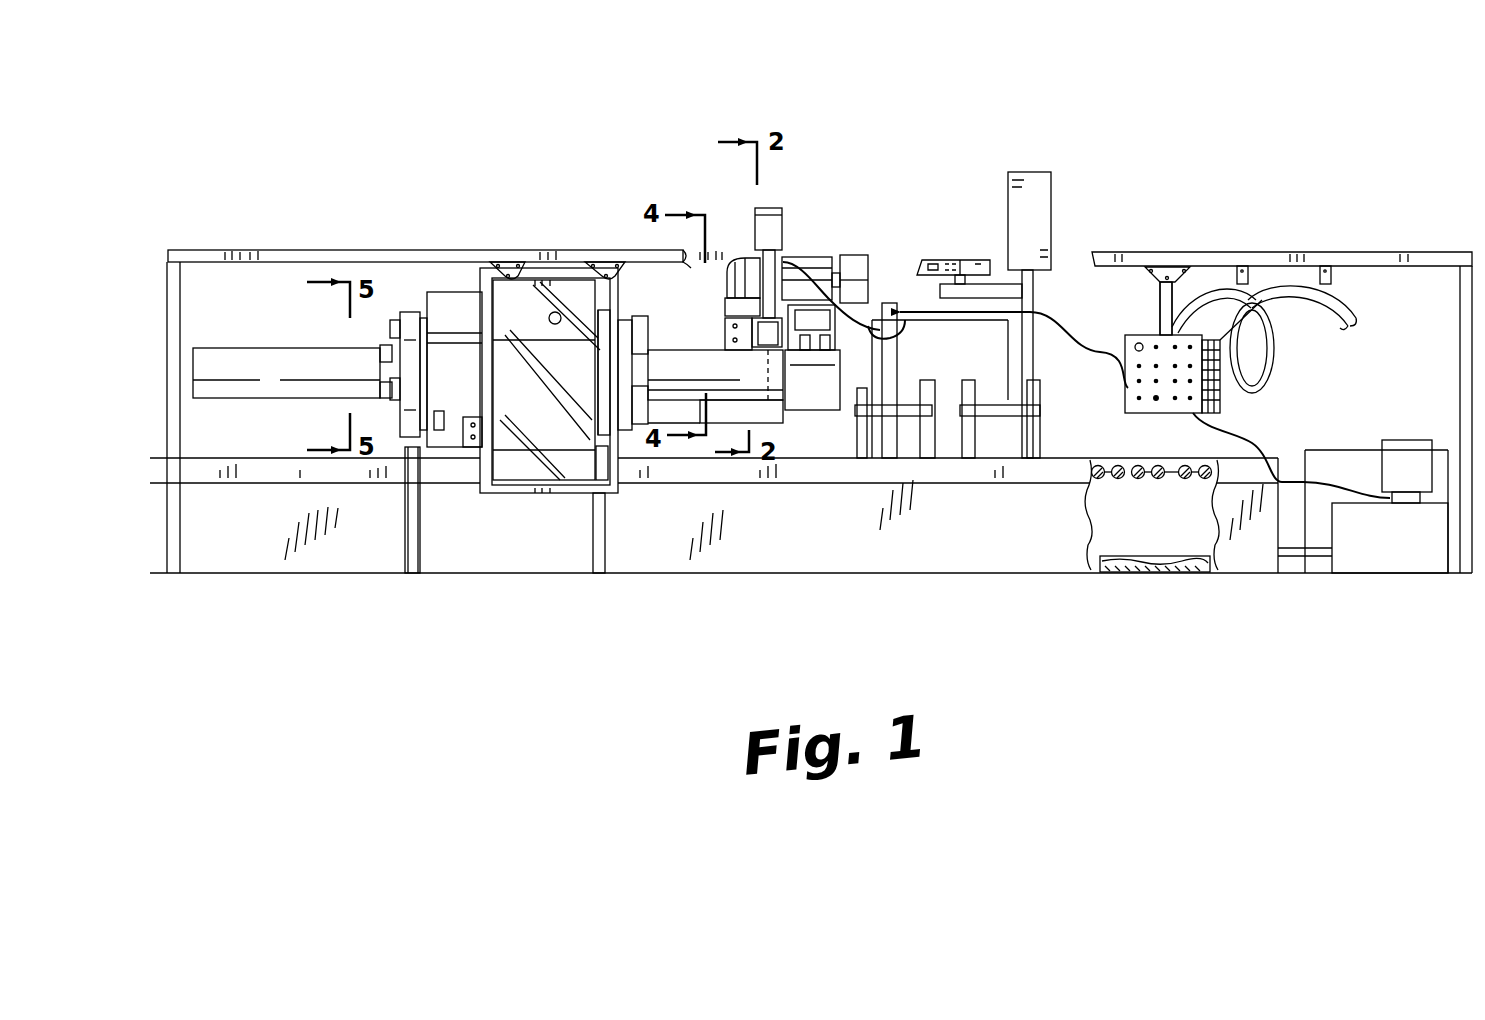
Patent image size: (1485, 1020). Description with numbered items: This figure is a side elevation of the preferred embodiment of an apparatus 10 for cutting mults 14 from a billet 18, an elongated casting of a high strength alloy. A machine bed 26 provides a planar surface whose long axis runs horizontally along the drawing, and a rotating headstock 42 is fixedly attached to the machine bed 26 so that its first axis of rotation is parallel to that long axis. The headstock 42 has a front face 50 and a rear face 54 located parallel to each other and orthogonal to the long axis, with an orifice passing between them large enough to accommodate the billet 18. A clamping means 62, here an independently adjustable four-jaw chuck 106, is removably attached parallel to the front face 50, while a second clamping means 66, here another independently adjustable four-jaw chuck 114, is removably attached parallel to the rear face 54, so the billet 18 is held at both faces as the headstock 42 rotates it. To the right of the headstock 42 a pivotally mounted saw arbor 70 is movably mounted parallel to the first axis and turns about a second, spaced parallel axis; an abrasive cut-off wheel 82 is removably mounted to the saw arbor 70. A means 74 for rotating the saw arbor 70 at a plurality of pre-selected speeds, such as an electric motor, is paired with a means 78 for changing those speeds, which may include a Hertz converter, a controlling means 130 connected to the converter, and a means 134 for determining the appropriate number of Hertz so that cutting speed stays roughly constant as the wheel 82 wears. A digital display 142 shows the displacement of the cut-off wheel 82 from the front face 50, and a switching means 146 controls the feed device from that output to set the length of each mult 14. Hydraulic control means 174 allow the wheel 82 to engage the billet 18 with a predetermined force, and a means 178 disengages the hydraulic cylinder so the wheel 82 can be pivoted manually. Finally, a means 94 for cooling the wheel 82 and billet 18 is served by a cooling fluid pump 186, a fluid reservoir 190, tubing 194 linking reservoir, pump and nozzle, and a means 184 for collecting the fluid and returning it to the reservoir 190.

The apparatus 10 is at (1142, 150).
The mult 14 is at (775, 387).
The billet 18 is at (725, 385).
The machine bed 26 is at (1048, 463).
The rotating headstock 42 is at (450, 290).
The front face 50 is at (598, 358).
The rear face 54 is at (415, 338).
The clamping means 62 is at (650, 405).
The clamping means 66 is at (402, 432).
The pivotally mounted saw arbor 70 is at (740, 258).
The means for rotating the saw arbor 74 is at (826, 258).
The means for changing the pre-selected speeds 78 is at (1168, 343).
The abrasive cut-off wheel 82 is at (785, 262).
The means for cooling 94 is at (832, 288).
The independently adjustable four-jaw chuck 106 is at (622, 292).
The independently adjustable four-jaw chuck 114 is at (330, 377).
The controlling means 130 is at (1168, 342).
The means for determining an appropriate number of Hertz 134 is at (1213, 338).
The digital display 142 is at (947, 260).
The switching means 146 is at (1135, 362).
The control means 174 is at (1218, 401).
The means for disengaging the hydraulic cylinder 178 is at (1157, 399).
The means for collecting cooling fluid 184 is at (1122, 555).
The cooling fluid pump 186 is at (1403, 440).
The fluid reservoir 190 is at (1370, 550).
The tubing 194 is at (1256, 446).